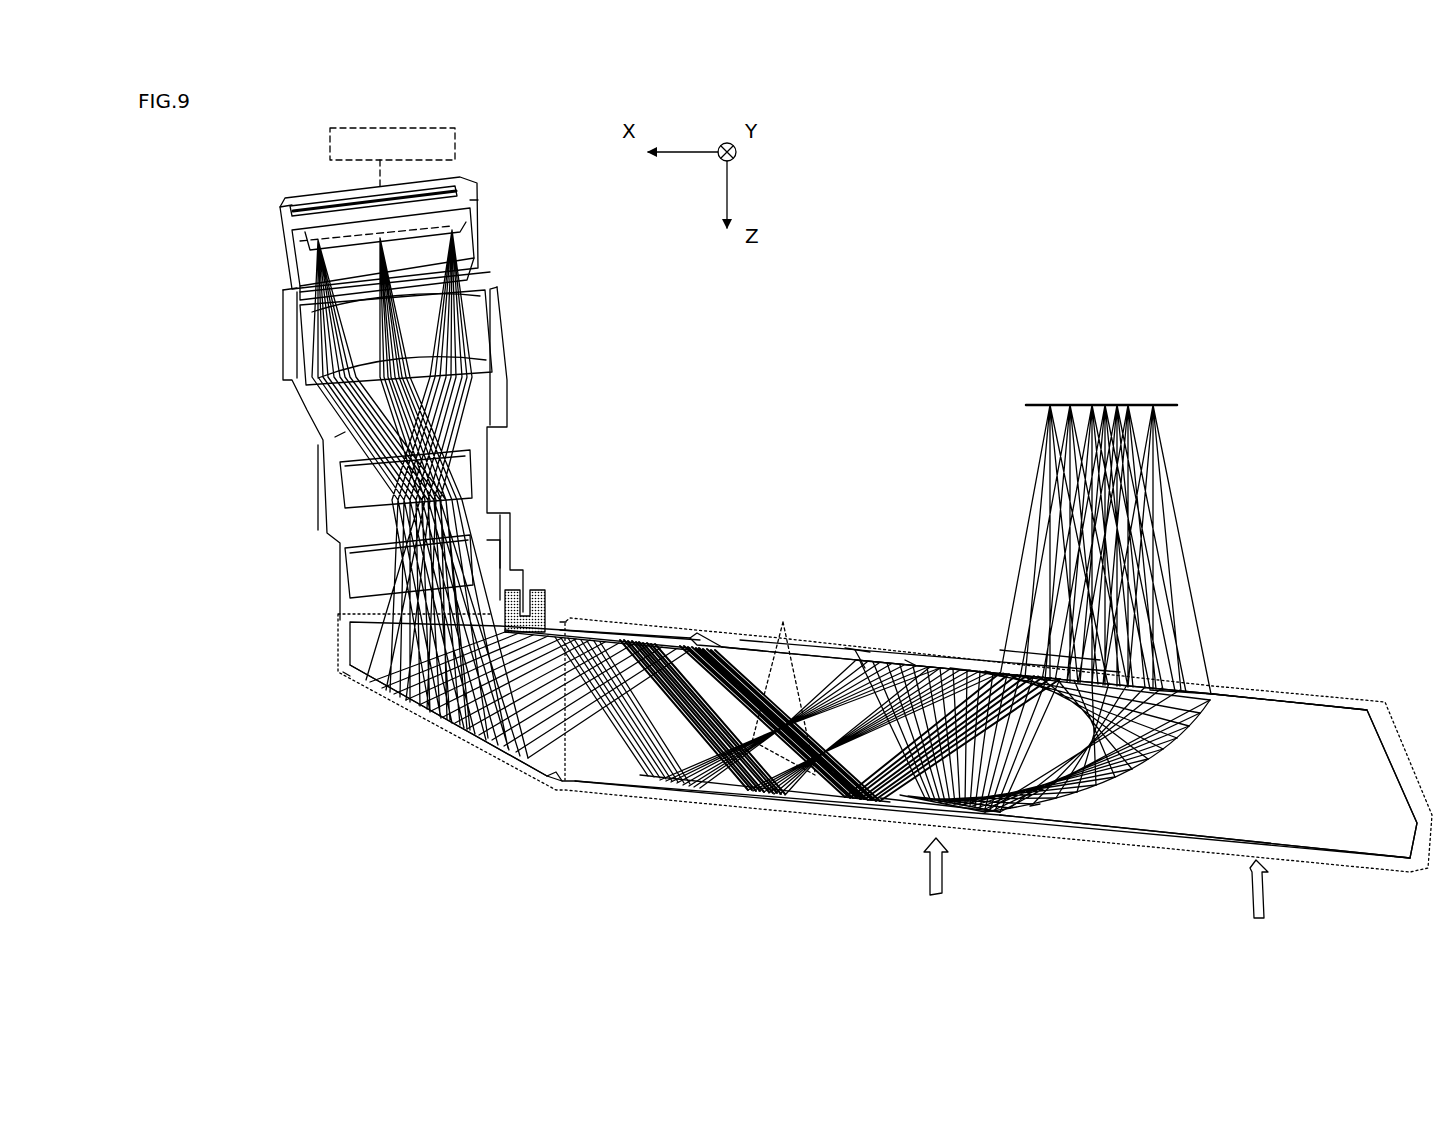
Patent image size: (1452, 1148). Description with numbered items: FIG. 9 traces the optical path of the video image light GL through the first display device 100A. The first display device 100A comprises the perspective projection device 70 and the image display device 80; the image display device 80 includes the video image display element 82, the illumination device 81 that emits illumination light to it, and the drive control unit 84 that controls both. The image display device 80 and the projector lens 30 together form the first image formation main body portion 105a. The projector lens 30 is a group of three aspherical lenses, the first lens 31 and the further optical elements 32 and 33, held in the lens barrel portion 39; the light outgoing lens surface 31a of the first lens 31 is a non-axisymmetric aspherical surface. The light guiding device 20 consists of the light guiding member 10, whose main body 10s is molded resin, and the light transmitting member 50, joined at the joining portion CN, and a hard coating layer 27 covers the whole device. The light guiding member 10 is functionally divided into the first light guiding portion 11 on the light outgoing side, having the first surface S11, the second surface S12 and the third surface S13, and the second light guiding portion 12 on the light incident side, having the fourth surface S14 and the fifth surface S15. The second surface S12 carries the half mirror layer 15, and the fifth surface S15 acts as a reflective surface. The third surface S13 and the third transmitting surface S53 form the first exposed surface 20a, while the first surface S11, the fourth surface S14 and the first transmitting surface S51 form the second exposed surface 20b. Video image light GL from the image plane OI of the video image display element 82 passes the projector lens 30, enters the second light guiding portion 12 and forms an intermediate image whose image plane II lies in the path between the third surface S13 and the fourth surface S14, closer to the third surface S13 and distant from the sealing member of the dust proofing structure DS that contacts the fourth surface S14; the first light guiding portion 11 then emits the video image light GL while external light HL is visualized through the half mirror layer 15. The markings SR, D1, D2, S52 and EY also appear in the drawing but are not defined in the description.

The light guiding member 10 is at (906, 536).
The main body 10s is at (819, 662).
The first light guiding portion 11 is at (890, 802).
The second light guiding portion 12 is at (548, 768).
The half mirror layer 15 is at (1074, 792).
The light guiding device 20 is at (777, 857).
The first exposed surface 20a is at (832, 800).
The second exposed surface 20b is at (853, 645).
The hard coating layer 27 is at (860, 656).
The projector lens 30 is at (558, 266).
The first lens 31 is at (362, 568).
The lens surface 31a is at (478, 585).
The optical element 32 is at (350, 486).
The optical element 33 is at (300, 370).
The lens barrel portion 39 is at (512, 340).
The light transmitting member 50 is at (1205, 812).
The perspective projection device 70 is at (702, 470).
The image display device 80 is at (496, 184).
The illumination device 81 is at (305, 189).
The video image display element 82 is at (292, 255).
The drive control unit 84 is at (366, 128).
The first display device 100A is at (930, 234).
The first image formation main body portion 105a is at (816, 342).
The image plane OI is at (458, 229).
The video image light GL is at (340, 436).
The dust proofing structure DS is at (538, 606).
The light guiding region SR is at (756, 511).
The image plane of the intermediate image II is at (783, 684).
The first direction D1 is at (368, 692).
The second direction D2 is at (910, 660).
The first surface S11 is at (955, 662).
The second surface S12 is at (1016, 796).
The third surface S13 is at (750, 792).
The fourth surface S14 is at (625, 638).
The fifth surface S15 is at (446, 726).
The first transmitting surface S51 is at (1283, 690).
The second transmitting surface S52 is at (1186, 680).
The third transmitting surface S53 is at (1130, 836).
The eye EY is at (1132, 400).
The external light HL is at (925, 884).
The joining portion CN is at (1034, 804).